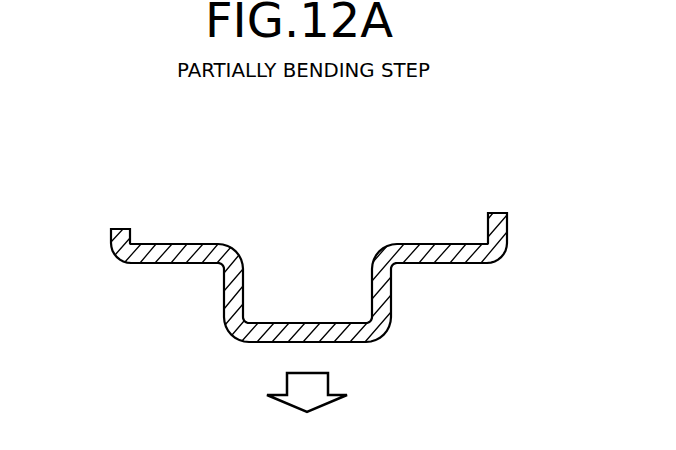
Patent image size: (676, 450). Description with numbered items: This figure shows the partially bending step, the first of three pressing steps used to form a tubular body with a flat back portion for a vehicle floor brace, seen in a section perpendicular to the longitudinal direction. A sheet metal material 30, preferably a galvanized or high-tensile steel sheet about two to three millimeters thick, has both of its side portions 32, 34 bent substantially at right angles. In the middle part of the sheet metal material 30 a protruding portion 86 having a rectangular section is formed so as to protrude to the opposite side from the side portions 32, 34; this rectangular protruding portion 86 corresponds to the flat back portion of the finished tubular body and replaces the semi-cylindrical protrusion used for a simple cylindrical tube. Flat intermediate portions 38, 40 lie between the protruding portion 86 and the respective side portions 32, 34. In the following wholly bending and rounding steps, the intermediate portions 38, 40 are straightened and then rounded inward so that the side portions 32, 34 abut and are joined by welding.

The sheet metal material 30 is at (402, 206).
The side portion 32 is at (500, 213).
The side portion 34 is at (118, 230).
The intermediate portion 38 is at (436, 250).
The intermediate portion 40 is at (162, 252).
The protruding portion 86 is at (302, 333).